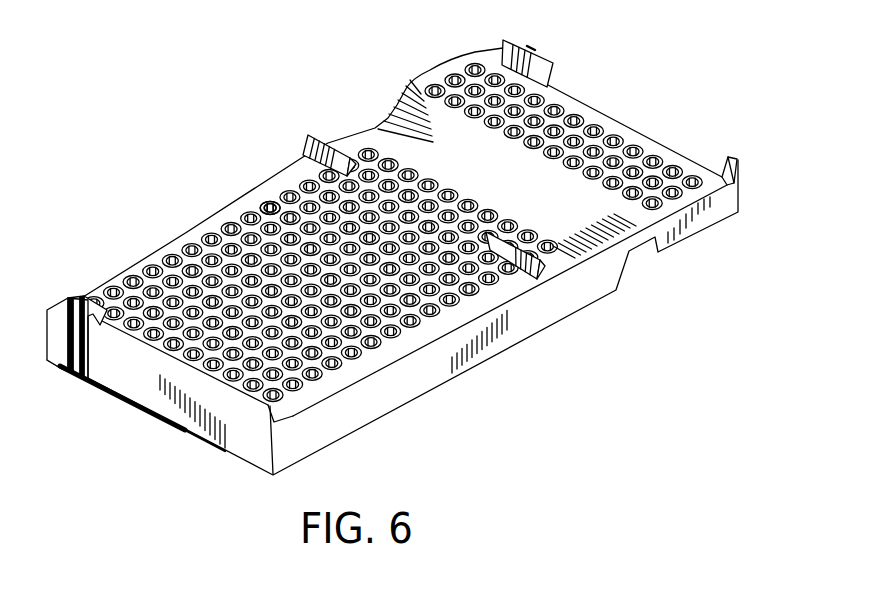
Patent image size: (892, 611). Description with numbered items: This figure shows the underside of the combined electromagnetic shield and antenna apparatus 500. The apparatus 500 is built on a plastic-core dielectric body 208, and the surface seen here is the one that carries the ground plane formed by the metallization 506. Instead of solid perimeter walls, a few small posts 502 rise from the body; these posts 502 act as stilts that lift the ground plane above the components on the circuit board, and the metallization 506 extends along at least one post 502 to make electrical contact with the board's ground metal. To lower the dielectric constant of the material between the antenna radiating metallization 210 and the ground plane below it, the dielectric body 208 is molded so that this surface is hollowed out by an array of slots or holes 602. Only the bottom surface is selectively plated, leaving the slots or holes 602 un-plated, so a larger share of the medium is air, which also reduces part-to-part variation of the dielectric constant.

The dielectric body 208 is at (186, 202).
The apparatus 500 is at (200, 480).
The antenna radiating metallization 210 is at (123, 397).
The posts 502 is at (734, 158).
The metallization 506 is at (522, 188).
The slots or holes 602 is at (271, 201).